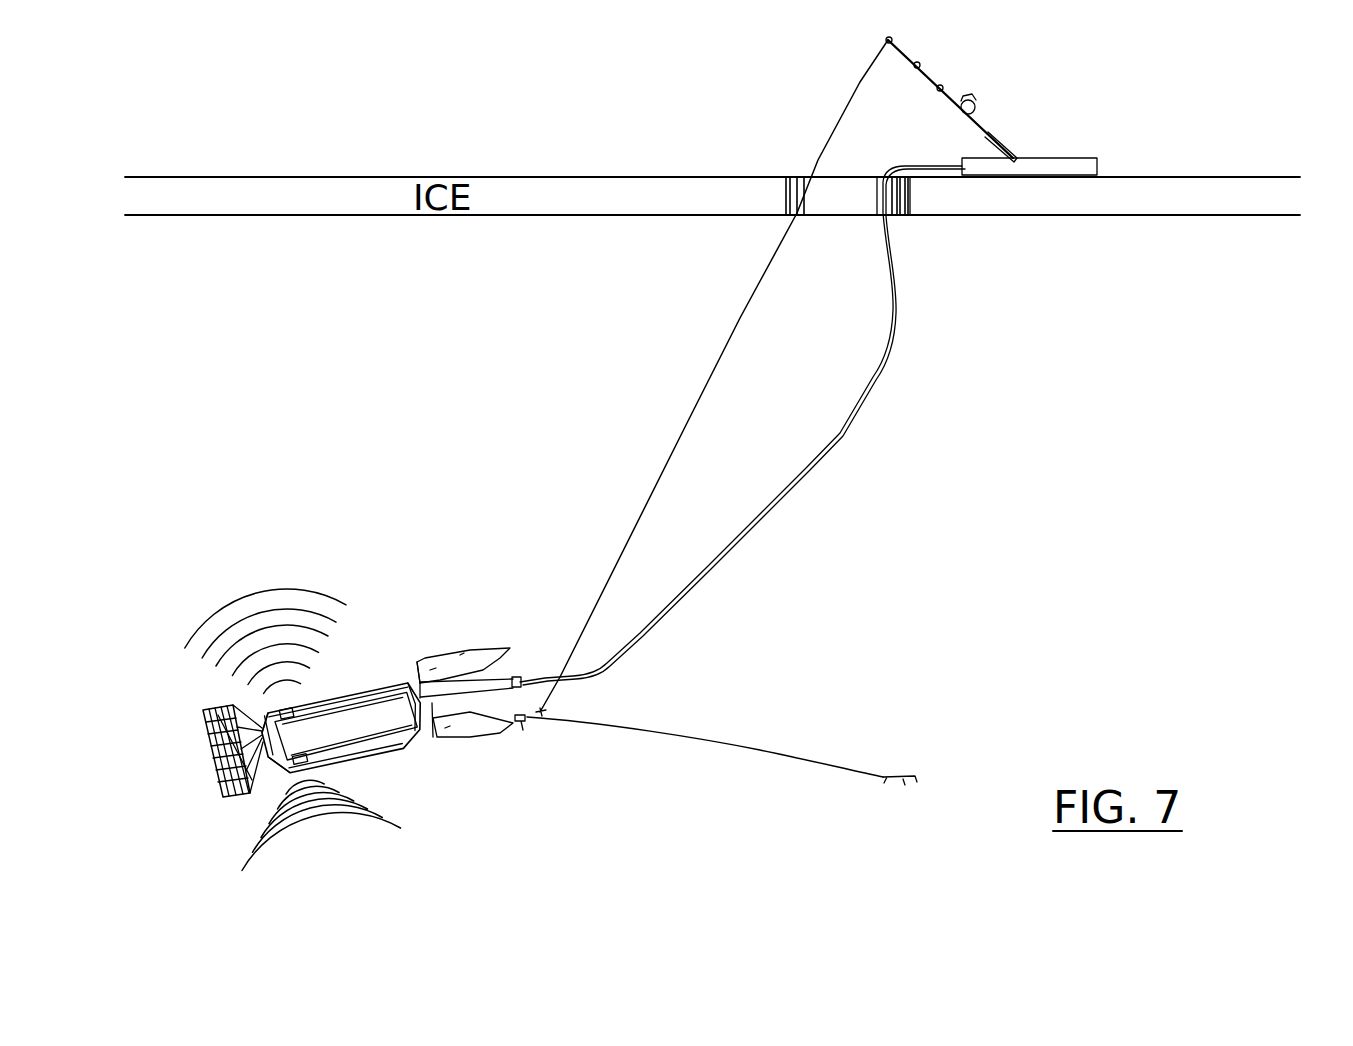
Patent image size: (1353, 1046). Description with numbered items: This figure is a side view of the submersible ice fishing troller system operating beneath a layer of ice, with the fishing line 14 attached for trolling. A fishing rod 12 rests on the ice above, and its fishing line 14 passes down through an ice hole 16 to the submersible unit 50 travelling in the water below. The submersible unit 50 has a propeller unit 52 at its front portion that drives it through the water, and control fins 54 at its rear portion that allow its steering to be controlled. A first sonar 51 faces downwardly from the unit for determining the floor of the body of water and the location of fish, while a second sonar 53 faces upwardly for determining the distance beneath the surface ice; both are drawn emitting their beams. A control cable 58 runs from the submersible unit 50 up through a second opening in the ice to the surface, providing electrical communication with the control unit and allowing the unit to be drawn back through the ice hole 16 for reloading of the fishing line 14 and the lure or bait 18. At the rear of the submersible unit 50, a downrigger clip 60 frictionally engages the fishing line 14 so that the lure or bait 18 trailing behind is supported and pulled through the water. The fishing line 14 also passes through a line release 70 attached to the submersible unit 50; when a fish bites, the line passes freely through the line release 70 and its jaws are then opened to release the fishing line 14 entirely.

The fishing rod 12 is at (967, 97).
The fishing line 14 is at (688, 440).
The ice hole 16 is at (823, 183).
The lure or bait 18 is at (887, 780).
The submersible unit 50 is at (355, 690).
The first sonar 51 is at (287, 777).
The propeller unit 52 is at (207, 720).
The second sonar 53 is at (297, 707).
The control fins 54 is at (432, 717).
The control cable 58 is at (840, 447).
The downrigger clip 60 is at (543, 712).
The line release 70 is at (525, 724).